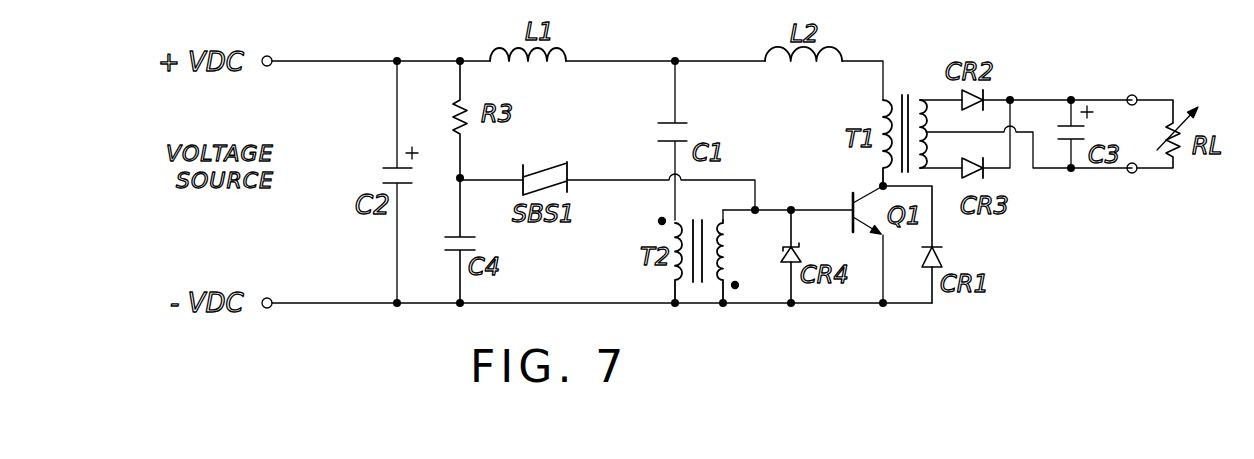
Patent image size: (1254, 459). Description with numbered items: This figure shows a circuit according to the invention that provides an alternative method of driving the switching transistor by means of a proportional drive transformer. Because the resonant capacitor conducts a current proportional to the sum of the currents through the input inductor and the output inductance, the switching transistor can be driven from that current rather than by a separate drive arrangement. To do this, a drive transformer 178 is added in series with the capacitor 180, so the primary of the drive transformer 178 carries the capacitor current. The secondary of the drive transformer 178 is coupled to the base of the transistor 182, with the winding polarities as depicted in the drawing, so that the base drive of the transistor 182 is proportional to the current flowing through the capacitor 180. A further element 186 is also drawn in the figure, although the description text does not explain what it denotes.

The drive transformer 178 is at (675, 280).
The capacitor 180 is at (662, 106).
The transistor 182 is at (851, 193).
The zener diode CR4 186 is at (783, 250).